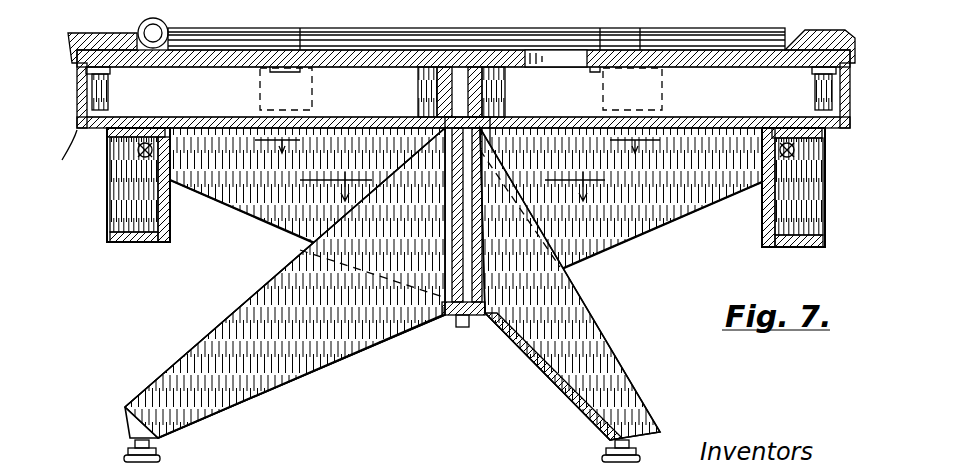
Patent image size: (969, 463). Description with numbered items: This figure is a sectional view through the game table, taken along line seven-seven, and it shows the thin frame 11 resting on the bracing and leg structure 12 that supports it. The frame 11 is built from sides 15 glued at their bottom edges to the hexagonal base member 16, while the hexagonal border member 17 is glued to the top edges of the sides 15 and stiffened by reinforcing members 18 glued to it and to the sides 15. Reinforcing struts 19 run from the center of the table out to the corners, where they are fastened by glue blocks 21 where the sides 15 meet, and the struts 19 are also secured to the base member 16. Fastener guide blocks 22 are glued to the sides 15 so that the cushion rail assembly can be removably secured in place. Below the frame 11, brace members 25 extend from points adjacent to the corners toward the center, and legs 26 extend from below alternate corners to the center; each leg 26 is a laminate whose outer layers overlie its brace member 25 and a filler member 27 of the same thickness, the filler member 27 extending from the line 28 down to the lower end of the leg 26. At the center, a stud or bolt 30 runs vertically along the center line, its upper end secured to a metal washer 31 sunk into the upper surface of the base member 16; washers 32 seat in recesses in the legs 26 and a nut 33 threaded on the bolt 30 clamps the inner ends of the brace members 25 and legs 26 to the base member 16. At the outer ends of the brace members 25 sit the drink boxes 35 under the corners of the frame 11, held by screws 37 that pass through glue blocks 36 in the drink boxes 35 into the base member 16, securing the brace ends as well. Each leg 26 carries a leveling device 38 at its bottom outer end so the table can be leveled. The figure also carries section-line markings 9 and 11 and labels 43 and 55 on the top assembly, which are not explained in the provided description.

The section line 9 is at (450, 142).
The frame 11 is at (342, 165).
The bracing and leg structure 12 is at (212, 333).
The sides 15 is at (80, 98).
The hexagonal base member 16 is at (530, 128).
The hexagonal border member 17 is at (95, 33).
The reinforcing members 18 is at (110, 70).
The reinforcing struts 19 is at (357, 110).
The glue blocks 21 is at (100, 103).
The fastener guide blocks 22 is at (350, 72).
The brace members 25 is at (270, 207).
The legs 26 is at (278, 290).
The filler member 27 is at (330, 372).
The line 28 is at (375, 255).
The stud or bolt 30 is at (452, 212).
The metal washer 31 is at (478, 88).
The washers 32 is at (442, 308).
The nut 33 is at (458, 324).
The drink boxes 35 is at (170, 208).
The glue blocks 36 is at (130, 180).
The screws 37 is at (135, 150).
The leveling device 38 is at (158, 455).
The top board 43 is at (224, 30).
The insert block 55 is at (556, 55).